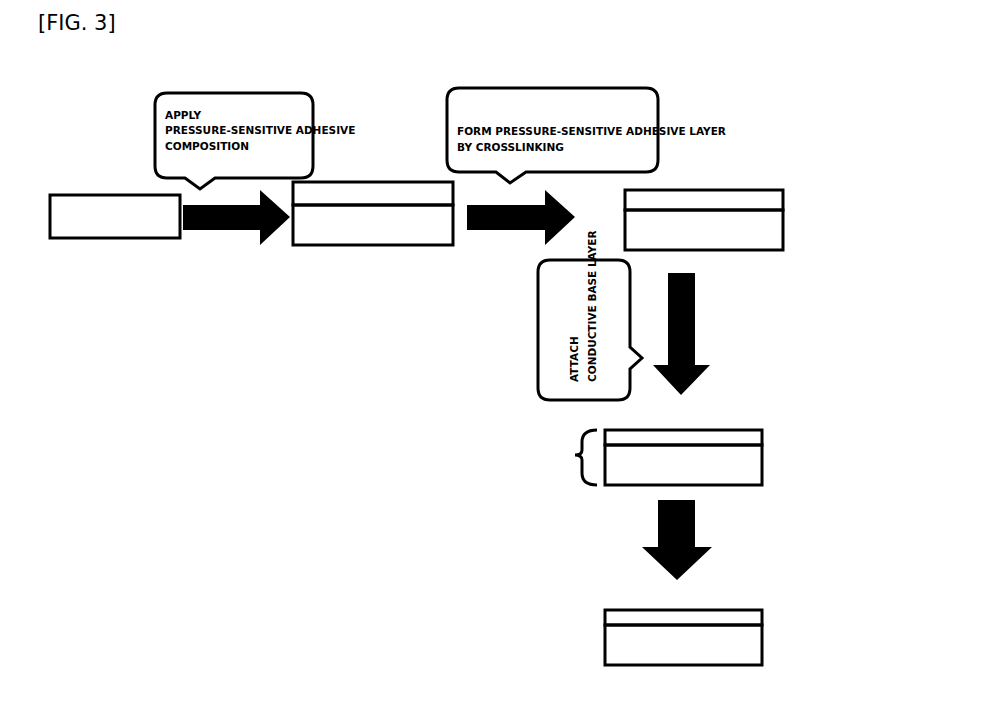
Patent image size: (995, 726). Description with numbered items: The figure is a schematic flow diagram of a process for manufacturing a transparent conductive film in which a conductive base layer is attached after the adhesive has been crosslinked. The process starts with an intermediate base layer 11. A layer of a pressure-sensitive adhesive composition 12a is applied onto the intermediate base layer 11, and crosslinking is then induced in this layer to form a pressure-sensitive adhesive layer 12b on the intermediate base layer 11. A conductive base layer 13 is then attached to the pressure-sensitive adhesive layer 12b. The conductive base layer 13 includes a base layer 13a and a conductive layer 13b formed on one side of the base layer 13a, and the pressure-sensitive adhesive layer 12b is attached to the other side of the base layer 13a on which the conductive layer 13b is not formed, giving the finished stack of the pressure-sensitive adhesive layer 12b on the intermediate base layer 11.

The intermediate base layer 11 is at (127, 195).
The layer of pressure-sensitive adhesive composition 12a is at (370, 182).
The pressure-sensitive adhesive layer 12b is at (730, 190).
The conductive base layer 13 is at (692, 478).
The base layer 13a is at (730, 485).
The conductive layer 13b is at (765, 437).